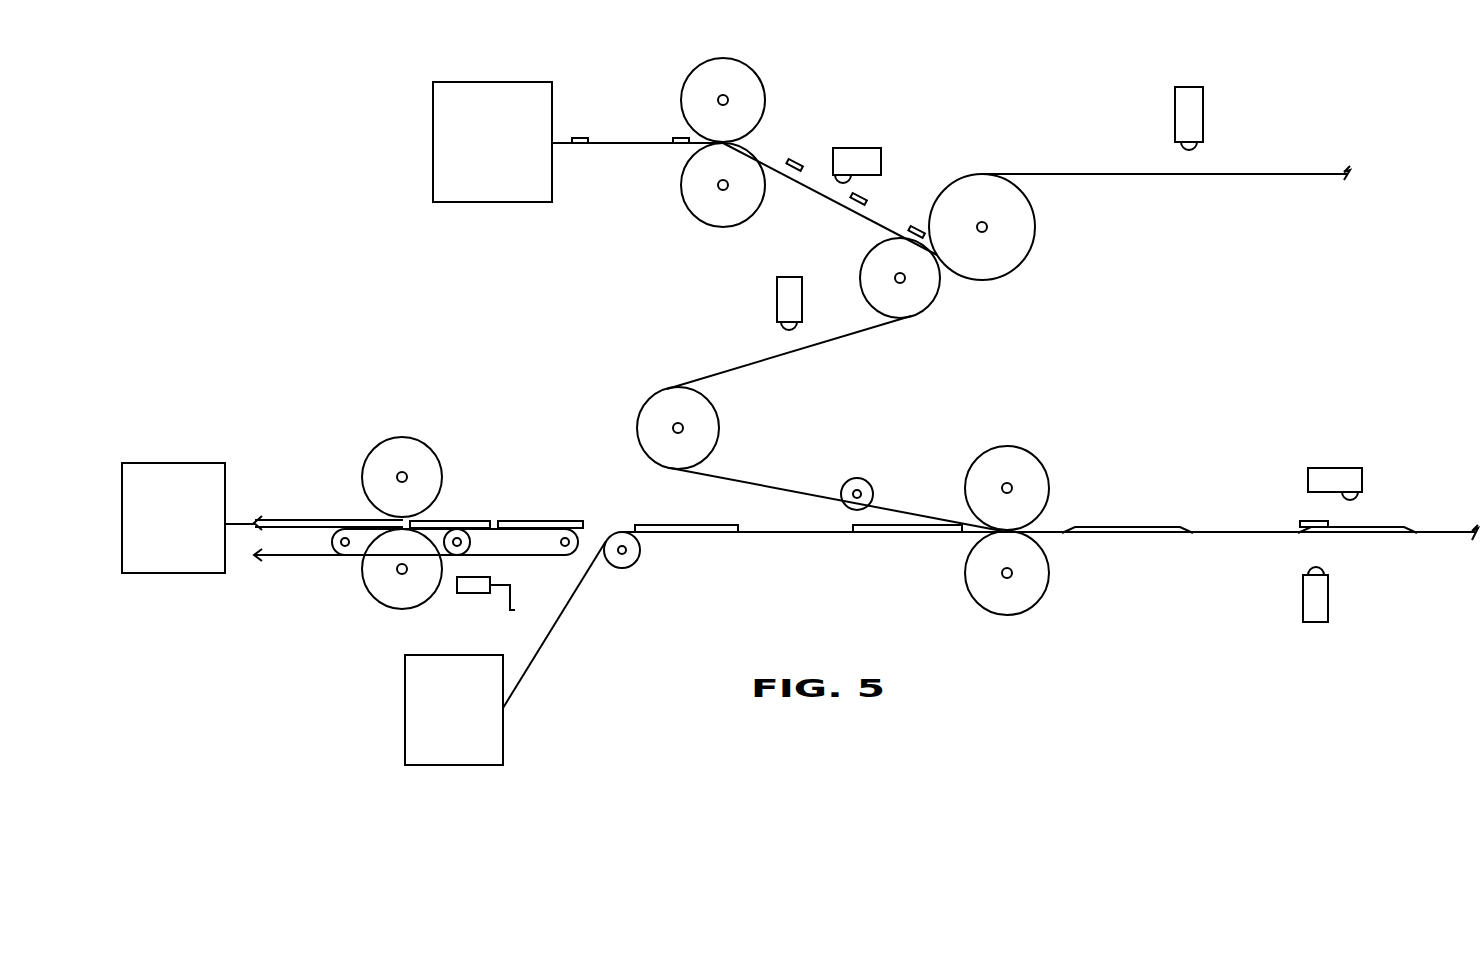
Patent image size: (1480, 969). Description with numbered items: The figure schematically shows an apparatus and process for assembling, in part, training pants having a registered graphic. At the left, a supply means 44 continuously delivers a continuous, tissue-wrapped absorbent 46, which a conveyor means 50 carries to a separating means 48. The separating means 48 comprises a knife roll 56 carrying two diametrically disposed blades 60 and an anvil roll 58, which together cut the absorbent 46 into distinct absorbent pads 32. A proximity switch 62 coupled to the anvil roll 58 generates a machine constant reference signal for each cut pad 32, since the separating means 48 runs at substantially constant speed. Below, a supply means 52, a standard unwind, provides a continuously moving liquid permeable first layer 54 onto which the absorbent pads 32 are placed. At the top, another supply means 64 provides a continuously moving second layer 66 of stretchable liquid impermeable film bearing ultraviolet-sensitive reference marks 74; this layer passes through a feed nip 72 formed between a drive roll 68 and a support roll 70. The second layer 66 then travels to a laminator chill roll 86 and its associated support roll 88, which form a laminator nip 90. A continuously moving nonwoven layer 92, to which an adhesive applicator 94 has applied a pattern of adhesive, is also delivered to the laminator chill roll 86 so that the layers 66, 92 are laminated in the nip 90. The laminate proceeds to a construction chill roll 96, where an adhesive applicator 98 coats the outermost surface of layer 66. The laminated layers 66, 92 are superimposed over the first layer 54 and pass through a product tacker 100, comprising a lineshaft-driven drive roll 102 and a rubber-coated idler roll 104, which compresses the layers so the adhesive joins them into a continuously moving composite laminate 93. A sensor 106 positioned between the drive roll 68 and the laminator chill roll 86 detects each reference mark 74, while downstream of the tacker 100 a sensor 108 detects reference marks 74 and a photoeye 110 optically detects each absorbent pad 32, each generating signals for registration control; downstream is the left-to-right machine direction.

The absorbent pad 32 is at (487, 515).
The supply means 44 is at (219, 440).
The continuous tissue-wrapped absorbent 46 is at (275, 518).
The separating means 48 is at (357, 613).
The conveyor means 50 is at (298, 570).
The supply means 52 is at (403, 720).
The first layer of material 54 is at (553, 622).
The knife roll 56 is at (438, 450).
The anvil roll 58 is at (408, 600).
The blade 60 is at (402, 437).
The proximity switch 62 is at (480, 593).
The supply means 64 is at (520, 76).
The second layer 66 is at (620, 143).
The drive roll 68 is at (732, 62).
The support roll 70 is at (700, 222).
The feed nip 72 is at (770, 130).
The reference mark 74 is at (577, 137).
The laminator chill roll 86 is at (1035, 235).
The support roll 88 is at (867, 308).
The laminator nip 90 is at (955, 287).
The continuously moving layer 92 is at (1265, 172).
The composite laminate 93 is at (1133, 553).
The adhesive applicator 94 is at (1214, 76).
The construction chill roll 96 is at (667, 403).
The adhesive applicator 98 is at (771, 297).
The product tacker 100 is at (962, 550).
The drive roll 102 is at (1025, 458).
The rubber-coated idler roll 104 is at (1040, 615).
The sensor 106 is at (863, 143).
The sensor 108 is at (1342, 452).
The photoeye 110 is at (1292, 620).